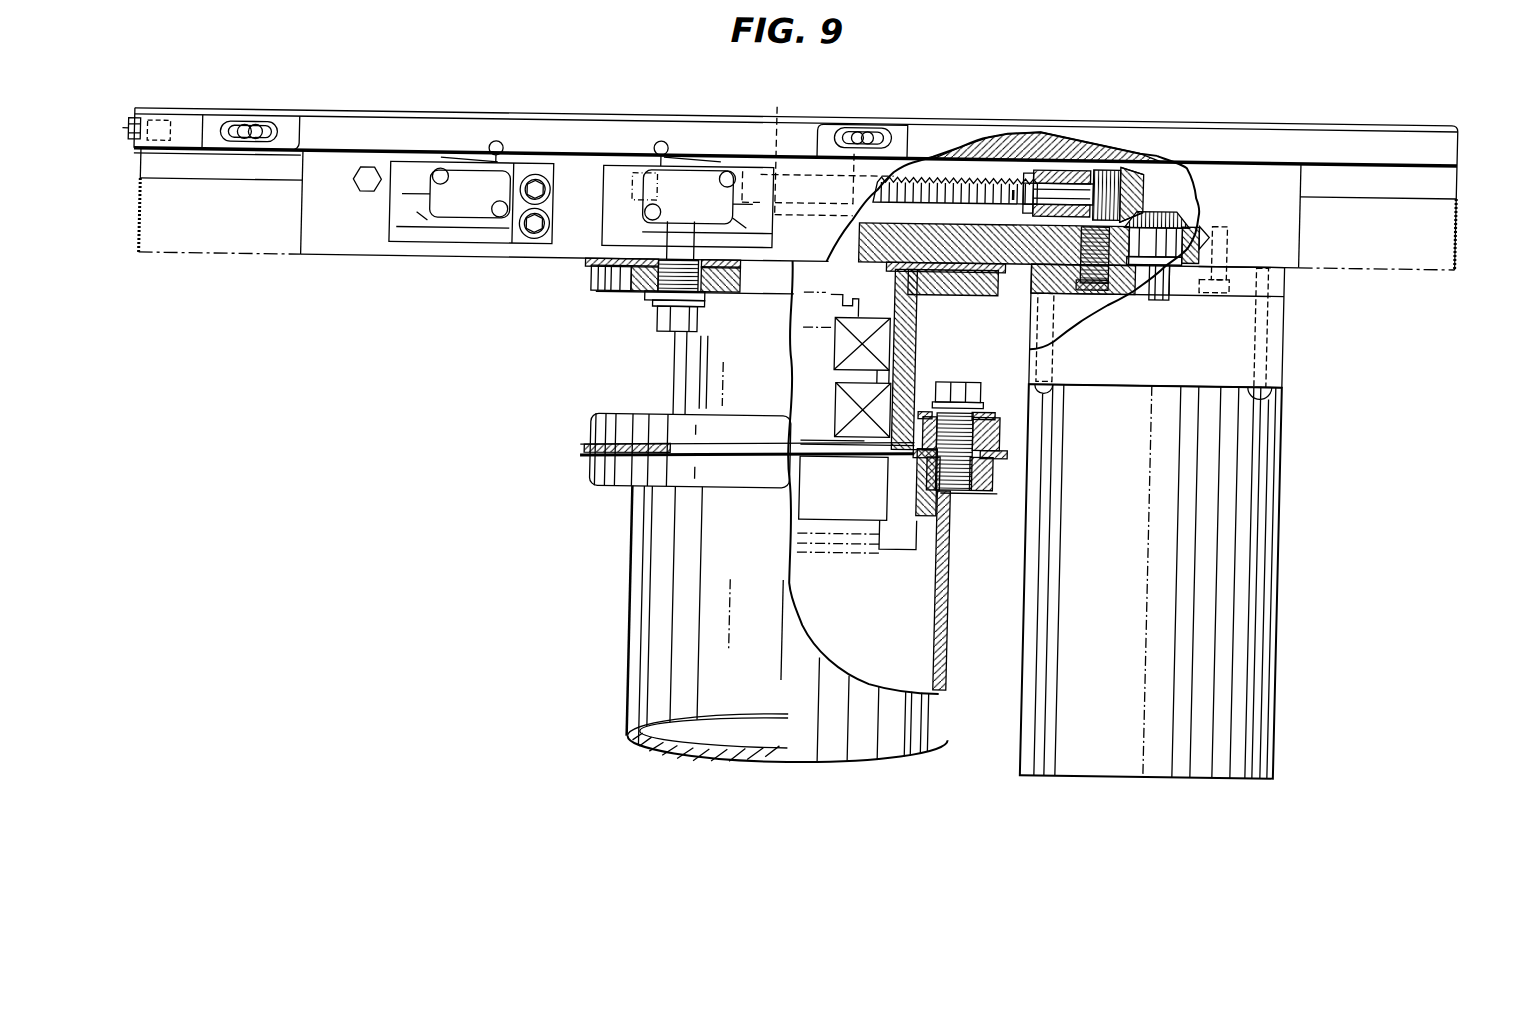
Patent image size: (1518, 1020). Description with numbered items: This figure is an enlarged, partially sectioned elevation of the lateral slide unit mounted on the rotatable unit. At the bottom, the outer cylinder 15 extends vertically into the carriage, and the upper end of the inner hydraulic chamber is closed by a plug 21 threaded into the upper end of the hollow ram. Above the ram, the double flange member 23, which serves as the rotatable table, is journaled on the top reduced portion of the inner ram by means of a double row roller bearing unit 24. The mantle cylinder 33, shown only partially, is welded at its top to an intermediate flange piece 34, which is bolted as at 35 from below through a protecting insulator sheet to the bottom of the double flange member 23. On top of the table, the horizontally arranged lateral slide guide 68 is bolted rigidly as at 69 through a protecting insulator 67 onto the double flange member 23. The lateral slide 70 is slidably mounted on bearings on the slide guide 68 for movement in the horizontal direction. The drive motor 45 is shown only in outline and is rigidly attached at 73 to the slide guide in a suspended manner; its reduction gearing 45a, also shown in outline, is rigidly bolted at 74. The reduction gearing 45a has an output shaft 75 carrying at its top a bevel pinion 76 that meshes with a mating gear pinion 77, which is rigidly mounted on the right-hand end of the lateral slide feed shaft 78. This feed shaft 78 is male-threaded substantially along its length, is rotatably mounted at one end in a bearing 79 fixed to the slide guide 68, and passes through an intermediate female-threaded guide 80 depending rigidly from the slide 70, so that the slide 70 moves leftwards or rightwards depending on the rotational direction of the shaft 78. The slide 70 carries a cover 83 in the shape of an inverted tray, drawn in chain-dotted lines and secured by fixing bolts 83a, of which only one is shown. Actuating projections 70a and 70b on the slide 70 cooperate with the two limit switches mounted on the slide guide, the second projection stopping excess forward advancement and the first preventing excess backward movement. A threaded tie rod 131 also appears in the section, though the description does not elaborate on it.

The outer cylinder 15 is at (935, 656).
The plug 21 is at (935, 535).
The double flange member 23 is at (921, 320).
The double row roller bearing unit 24 is at (883, 352).
The mantle cylinder 33 is at (957, 598).
The intermediate flange piece 34 is at (1004, 489).
The bolt 35 is at (968, 380).
The drive motor 45 is at (1286, 560).
The reduction gearing 45a is at (1268, 358).
The protecting insulator 67 is at (1000, 296).
The lateral slide guide 68 is at (847, 243).
The bolt 69 is at (703, 312).
The lateral slide 70 is at (630, 138).
The actuating projection 70a is at (293, 127).
The actuating projection 70b is at (900, 134).
The motor attachment 73 is at (1231, 247).
The bolt 74 is at (1271, 322).
The output shaft 75 is at (1161, 294).
The bevel pinion 76 is at (1156, 205).
The gear pinion 77 is at (1138, 168).
The lateral slide feed shaft 78 is at (958, 178).
The bearing 79 is at (1045, 170).
The female-threaded guide 80 is at (819, 149).
The cover 83 is at (141, 263).
The fixing bolt 83a is at (135, 125).
The tie rod 131 is at (1013, 445).